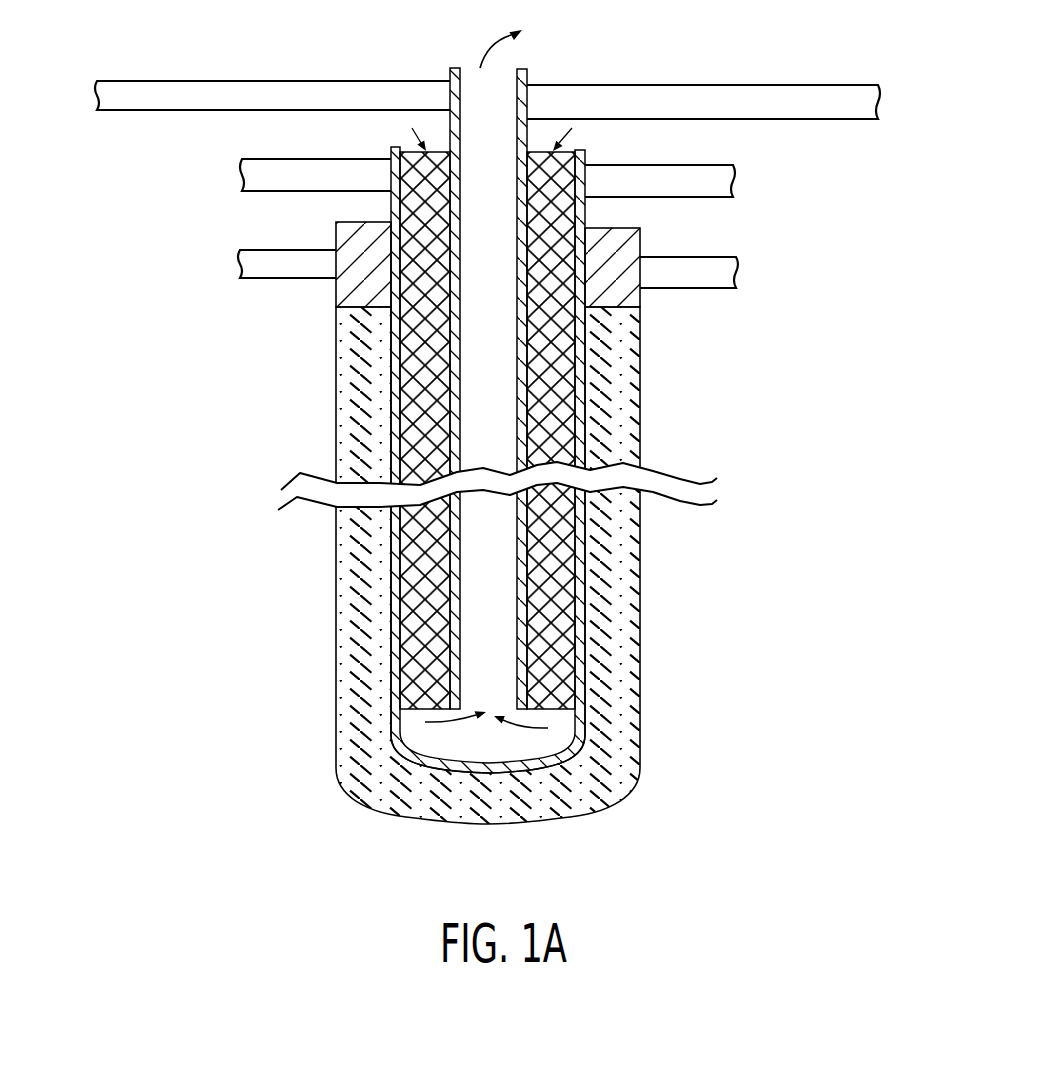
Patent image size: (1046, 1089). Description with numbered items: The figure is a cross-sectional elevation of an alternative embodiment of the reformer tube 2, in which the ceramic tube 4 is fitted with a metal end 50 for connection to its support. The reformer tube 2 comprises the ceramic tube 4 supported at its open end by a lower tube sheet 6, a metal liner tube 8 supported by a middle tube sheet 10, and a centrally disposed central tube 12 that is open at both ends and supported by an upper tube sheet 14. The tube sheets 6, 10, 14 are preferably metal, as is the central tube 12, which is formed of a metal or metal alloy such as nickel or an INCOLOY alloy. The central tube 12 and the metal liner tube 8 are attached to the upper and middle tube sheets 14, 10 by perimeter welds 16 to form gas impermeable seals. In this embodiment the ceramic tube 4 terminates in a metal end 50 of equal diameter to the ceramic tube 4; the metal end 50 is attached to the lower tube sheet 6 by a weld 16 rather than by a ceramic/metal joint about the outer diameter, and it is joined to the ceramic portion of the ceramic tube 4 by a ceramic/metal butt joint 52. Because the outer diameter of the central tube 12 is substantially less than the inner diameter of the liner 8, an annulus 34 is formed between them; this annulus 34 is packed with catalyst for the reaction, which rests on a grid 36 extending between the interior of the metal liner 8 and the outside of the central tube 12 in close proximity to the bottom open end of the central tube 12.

The reformer tube 2 is at (681, 754).
The ceramic tube 4 is at (616, 420).
The lower tube sheet 6 is at (712, 278).
The metal liner tube 8 is at (396, 628).
The middle tube sheet 10 is at (730, 184).
The central tube 12 is at (531, 621).
The upper tube sheet 14 is at (866, 108).
The perimeter weld 16 is at (440, 74).
The annulus 34 is at (546, 665).
The grid 36 is at (392, 705).
The metal end 50 is at (612, 278).
The butt joint 52 is at (338, 307).